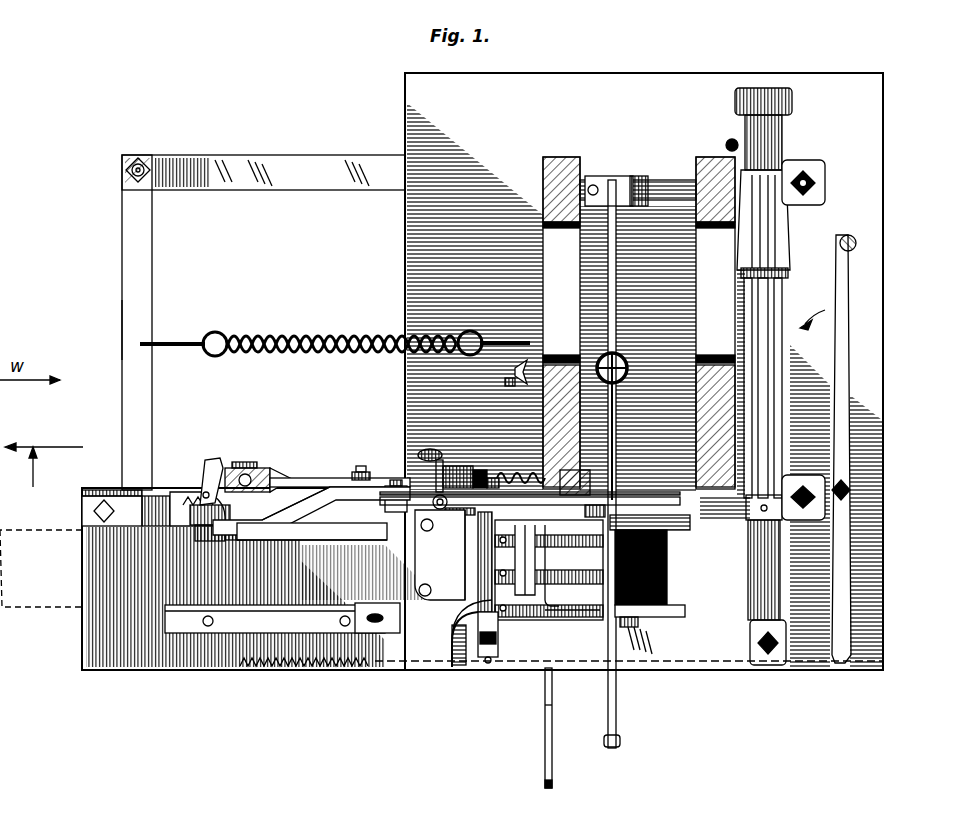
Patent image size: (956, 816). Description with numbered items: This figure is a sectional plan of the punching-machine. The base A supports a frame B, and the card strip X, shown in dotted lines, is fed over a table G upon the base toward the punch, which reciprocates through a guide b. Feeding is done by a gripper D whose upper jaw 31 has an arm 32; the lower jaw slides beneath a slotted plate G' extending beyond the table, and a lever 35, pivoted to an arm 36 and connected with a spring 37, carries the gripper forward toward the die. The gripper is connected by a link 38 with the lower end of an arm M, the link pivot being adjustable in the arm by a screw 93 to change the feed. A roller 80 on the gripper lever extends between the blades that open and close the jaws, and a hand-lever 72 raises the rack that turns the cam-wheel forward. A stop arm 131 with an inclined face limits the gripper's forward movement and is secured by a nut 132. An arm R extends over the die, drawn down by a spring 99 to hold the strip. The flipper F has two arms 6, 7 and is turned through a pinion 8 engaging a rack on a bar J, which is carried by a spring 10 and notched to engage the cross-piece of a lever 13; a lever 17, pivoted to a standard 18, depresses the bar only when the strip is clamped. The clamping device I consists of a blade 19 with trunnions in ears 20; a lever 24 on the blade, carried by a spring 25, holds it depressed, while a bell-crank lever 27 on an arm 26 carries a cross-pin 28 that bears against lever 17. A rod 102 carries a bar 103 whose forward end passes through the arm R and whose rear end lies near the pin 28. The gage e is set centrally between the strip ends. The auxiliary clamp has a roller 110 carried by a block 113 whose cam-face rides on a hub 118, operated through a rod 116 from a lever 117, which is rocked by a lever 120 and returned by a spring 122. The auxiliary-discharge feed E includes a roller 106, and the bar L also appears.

The base A is at (955, 450).
The arm 36 is at (263, 322).
The lever 35 is at (122, 328).
The spring 37 is at (312, 340).
The arm 131 is at (543, 290).
The auxiliary-discharge feed E is at (747, 372).
The spring 99 is at (630, 355).
The frame B is at (604, 464).
The arm R is at (616, 418).
The lever 117 is at (852, 383).
The lever 120 is at (852, 240).
The roller 106 is at (748, 578).
The rod 116 is at (791, 685).
The bar L is at (482, 579).
The gage e is at (370, 598).
The spring 122 is at (300, 672).
The strip X is at (41, 556).
The arm 26 is at (153, 508).
The spring 25 is at (185, 495).
The lever 24 is at (205, 460).
The bell-crank lever 27 is at (210, 541).
The cross-pin 28 is at (240, 540).
The screw 93 is at (236, 466).
The arm M is at (262, 468).
The link 38 is at (342, 476).
The standard 18 is at (362, 490).
The ears 20 is at (394, 486).
The clamping device I is at (311, 511).
The lever 17 is at (272, 518).
The bar 103 is at (340, 540).
The blade 19 is at (290, 538).
The table G is at (362, 572).
The roller 80 is at (443, 455).
The bar J is at (478, 470).
The lever 13 is at (493, 478).
The spring 10 is at (525, 466).
The pinion 8 is at (556, 478).
The flipper F is at (578, 502).
The arm 32 is at (445, 515).
The rod 102 is at (425, 532).
The slotted plate G' is at (462, 555).
The roller 110 is at (478, 580).
The gripper D is at (547, 556).
The arm 6 is at (518, 595).
The upper jaw 31 is at (545, 588).
The arm 7 is at (548, 612).
The block 113 is at (498, 636).
The hub 118 is at (458, 672).
The guide b is at (665, 620).
The hand-lever 72 is at (545, 735).
The nut 132 is at (512, 388).